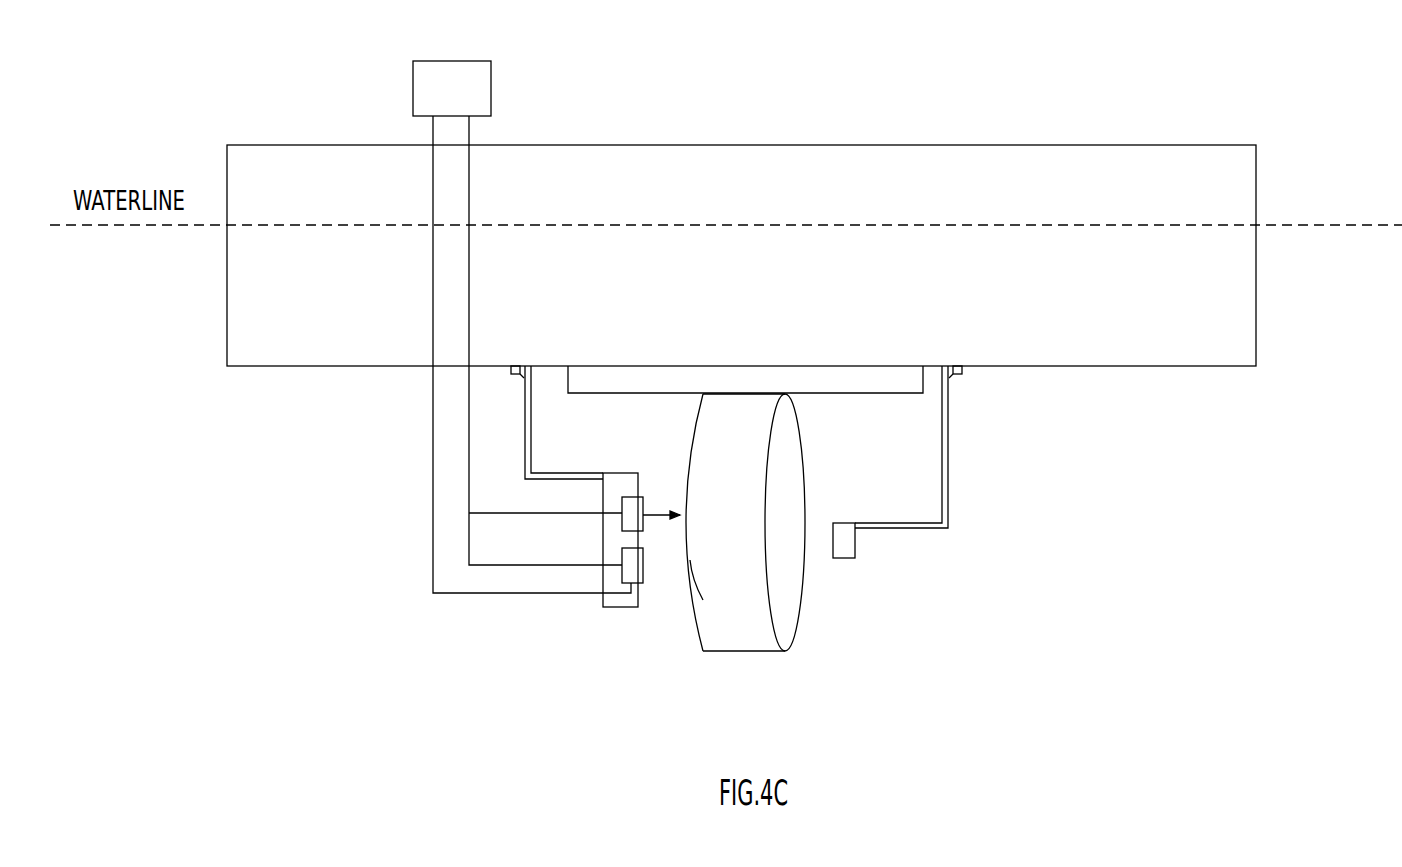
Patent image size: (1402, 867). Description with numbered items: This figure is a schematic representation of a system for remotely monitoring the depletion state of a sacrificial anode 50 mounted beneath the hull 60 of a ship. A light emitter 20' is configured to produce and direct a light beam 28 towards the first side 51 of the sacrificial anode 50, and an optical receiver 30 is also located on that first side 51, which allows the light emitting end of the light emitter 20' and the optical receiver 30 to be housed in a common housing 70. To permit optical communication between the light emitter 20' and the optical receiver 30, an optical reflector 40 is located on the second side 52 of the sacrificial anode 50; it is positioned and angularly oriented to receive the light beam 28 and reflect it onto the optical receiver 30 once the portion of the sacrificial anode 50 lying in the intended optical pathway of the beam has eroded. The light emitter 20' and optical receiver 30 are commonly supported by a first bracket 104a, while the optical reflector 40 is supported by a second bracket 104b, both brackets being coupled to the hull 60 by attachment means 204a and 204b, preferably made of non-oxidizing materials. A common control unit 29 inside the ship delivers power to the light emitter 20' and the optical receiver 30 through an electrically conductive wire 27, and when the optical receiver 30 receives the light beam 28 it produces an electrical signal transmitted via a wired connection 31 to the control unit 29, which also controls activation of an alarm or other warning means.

The hull 60 is at (756, 308).
The control unit 29 is at (433, 61).
The wired connection 31 is at (433, 548).
The electrically conductive wire 27 is at (470, 484).
The attachment means 204a is at (517, 378).
The attachment means 204b is at (955, 377).
The first bracket 104a is at (531, 458).
The second bracket 104b is at (942, 479).
The common housing 70 is at (625, 607).
The light emitter 20' is at (629, 472).
The optical receiver 30 is at (622, 556).
The light beam 28 is at (655, 509).
The sacrificial anode 50 is at (728, 651).
The first side 51 is at (790, 590).
The second side 52 is at (697, 632).
The optical reflector 40 is at (843, 523).